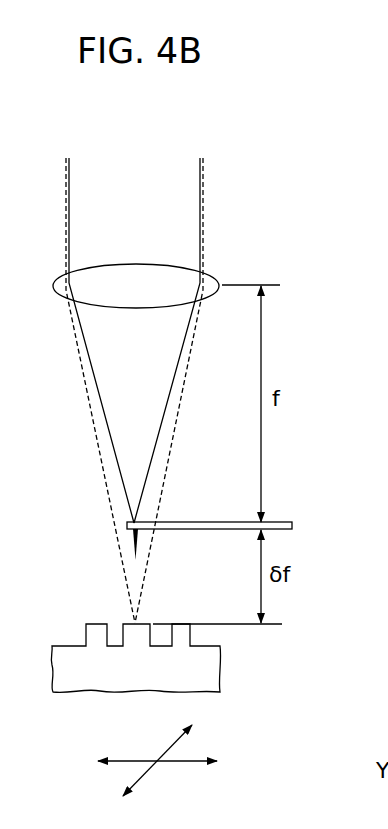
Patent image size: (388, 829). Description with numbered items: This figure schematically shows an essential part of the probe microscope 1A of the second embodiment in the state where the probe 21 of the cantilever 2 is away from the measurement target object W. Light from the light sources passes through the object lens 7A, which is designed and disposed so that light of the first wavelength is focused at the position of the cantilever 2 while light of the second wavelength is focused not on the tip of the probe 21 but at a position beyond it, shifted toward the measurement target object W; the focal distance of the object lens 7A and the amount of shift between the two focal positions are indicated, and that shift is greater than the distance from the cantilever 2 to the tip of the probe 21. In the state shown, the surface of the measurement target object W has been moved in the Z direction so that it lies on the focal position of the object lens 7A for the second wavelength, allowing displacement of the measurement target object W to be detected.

The probe microscope 1A is at (292, 190).
The object lens 7A is at (213, 285).
The cantilever 2 is at (194, 522).
The probe 21 is at (131, 528).
The measurement target object W is at (203, 669).